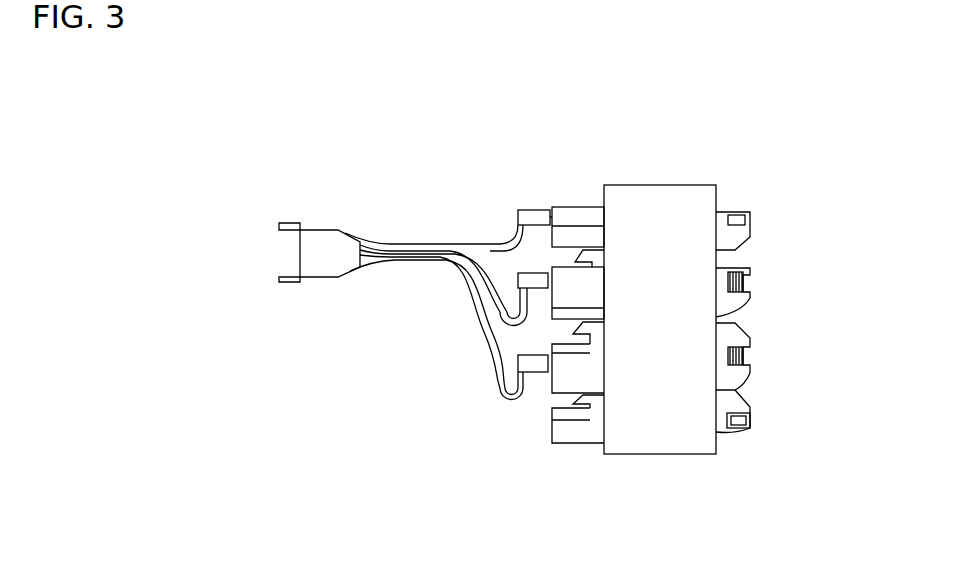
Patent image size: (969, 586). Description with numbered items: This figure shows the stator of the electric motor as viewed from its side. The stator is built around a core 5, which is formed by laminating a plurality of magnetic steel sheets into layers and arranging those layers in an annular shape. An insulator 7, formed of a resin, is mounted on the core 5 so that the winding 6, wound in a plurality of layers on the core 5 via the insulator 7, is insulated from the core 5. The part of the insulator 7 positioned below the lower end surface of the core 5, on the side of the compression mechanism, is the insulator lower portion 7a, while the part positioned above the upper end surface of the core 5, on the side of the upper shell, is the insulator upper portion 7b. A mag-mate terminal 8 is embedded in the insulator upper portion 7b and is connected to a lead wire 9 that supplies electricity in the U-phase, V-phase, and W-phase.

The core 5 is at (670, 428).
The winding 6 is at (718, 283).
The insulator 7 is at (557, 443).
The insulator lower portion 7a is at (720, 258).
The insulator upper portion 7b is at (585, 262).
The mag-mate terminal 8 is at (551, 375).
The lead wire 9 is at (493, 347).